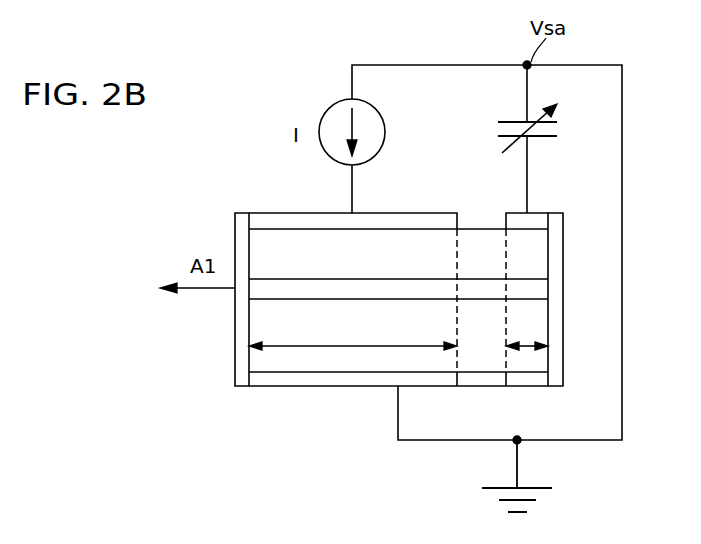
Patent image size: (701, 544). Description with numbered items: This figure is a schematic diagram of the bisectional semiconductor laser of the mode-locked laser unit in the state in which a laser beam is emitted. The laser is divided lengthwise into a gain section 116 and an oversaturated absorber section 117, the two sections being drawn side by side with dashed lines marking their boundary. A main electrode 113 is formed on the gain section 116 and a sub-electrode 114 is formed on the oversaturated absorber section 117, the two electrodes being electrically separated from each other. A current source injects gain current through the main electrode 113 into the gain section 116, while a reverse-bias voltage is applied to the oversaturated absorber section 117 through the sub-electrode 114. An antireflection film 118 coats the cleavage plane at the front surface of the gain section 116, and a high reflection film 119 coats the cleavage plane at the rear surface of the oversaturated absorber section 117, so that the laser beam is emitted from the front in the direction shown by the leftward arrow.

The main electrode 113 is at (286, 213).
The sub-electrode 114 is at (535, 213).
The gain section 116 is at (353, 333).
The oversaturated absorber section 117 is at (528, 333).
The antireflection film 118 is at (241, 365).
The high reflection film 119 is at (555, 358).